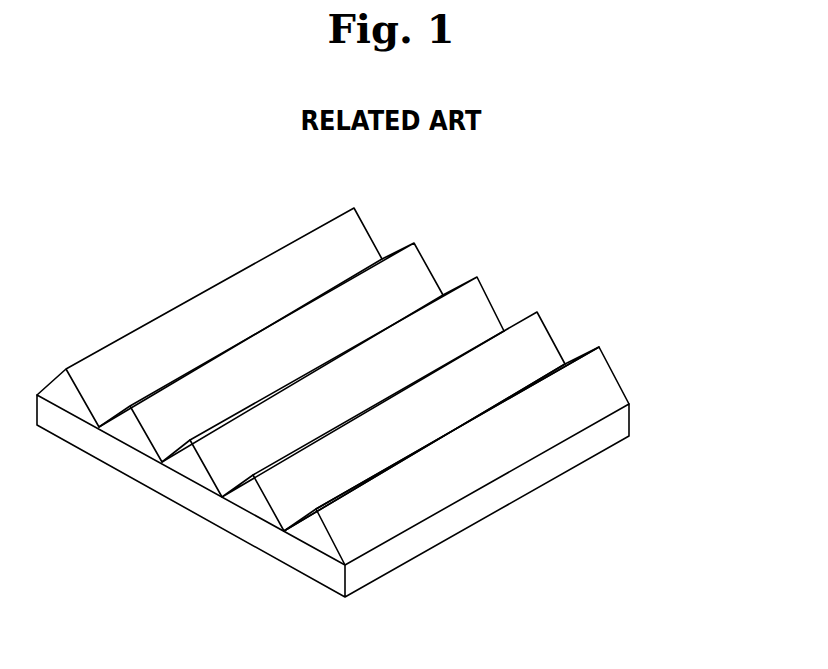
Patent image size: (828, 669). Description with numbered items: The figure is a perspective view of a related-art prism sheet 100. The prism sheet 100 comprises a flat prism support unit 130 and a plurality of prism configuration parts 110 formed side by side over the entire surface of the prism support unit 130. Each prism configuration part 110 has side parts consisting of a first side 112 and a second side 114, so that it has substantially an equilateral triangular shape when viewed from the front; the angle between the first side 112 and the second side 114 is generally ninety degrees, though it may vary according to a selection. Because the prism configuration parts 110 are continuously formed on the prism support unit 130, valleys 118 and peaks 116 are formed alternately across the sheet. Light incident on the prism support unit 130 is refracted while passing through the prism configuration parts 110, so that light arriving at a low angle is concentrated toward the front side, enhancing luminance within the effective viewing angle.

The prism sheet 100 is at (224, 196).
The prism configuration parts 110 is at (57, 387).
The first side 112 is at (607, 382).
The second side 114 is at (378, 468).
The peaks 116 is at (452, 290).
The valleys 118 is at (221, 498).
The prism support unit 130 is at (93, 453).